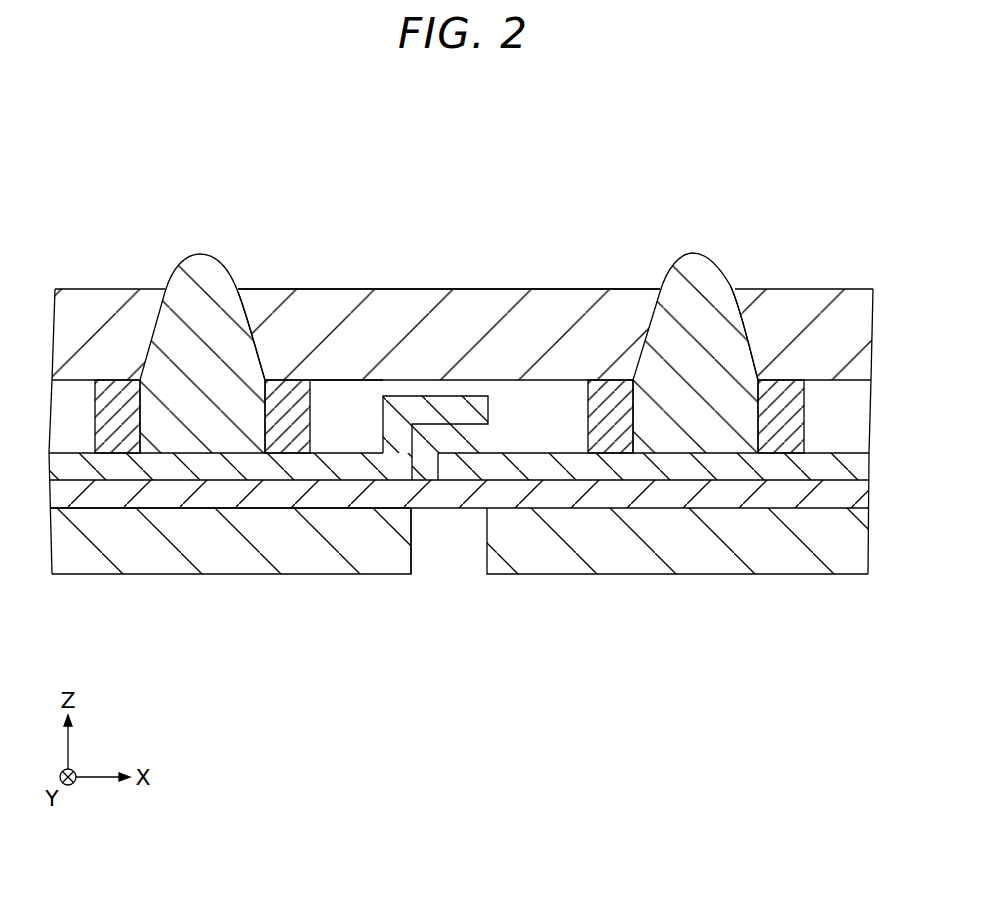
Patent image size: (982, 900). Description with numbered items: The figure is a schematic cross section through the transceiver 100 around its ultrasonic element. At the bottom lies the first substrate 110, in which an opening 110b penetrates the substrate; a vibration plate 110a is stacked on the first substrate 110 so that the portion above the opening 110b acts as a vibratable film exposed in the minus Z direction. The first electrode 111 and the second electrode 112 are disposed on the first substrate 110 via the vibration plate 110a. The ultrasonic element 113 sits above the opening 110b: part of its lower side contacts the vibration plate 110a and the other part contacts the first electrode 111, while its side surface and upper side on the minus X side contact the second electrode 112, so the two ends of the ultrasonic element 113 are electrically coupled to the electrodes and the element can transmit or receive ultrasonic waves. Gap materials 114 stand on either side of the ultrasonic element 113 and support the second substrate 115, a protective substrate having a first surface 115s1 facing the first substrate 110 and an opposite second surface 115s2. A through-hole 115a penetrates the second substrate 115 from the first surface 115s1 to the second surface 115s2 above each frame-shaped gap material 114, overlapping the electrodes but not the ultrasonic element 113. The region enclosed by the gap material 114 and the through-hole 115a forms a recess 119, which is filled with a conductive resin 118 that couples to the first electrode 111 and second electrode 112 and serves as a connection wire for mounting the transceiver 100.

The transceiver 100 is at (783, 137).
The first substrate 110 is at (167, 560).
The vibration plate 110a is at (347, 496).
The opening 110b is at (414, 550).
The first electrode 111 is at (683, 468).
The second electrode 112 is at (215, 470).
The ultrasonic element 113 is at (448, 440).
The gap material 114 is at (117, 440).
The second substrate 115 is at (82, 297).
The through-hole 115a is at (242, 300).
The first surface 115s1 is at (329, 383).
The second surface 115s2 is at (403, 289).
The conductive resin 118 is at (202, 254).
The recess 119 is at (193, 302).